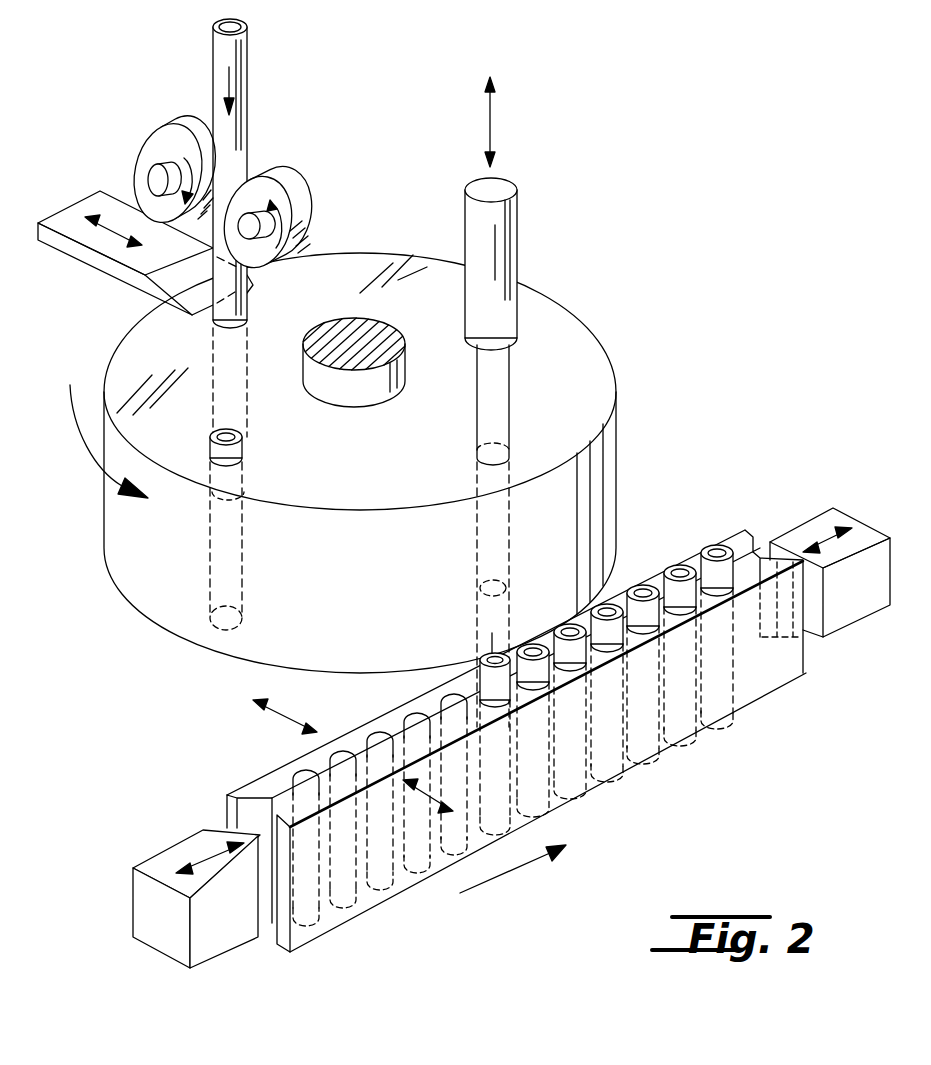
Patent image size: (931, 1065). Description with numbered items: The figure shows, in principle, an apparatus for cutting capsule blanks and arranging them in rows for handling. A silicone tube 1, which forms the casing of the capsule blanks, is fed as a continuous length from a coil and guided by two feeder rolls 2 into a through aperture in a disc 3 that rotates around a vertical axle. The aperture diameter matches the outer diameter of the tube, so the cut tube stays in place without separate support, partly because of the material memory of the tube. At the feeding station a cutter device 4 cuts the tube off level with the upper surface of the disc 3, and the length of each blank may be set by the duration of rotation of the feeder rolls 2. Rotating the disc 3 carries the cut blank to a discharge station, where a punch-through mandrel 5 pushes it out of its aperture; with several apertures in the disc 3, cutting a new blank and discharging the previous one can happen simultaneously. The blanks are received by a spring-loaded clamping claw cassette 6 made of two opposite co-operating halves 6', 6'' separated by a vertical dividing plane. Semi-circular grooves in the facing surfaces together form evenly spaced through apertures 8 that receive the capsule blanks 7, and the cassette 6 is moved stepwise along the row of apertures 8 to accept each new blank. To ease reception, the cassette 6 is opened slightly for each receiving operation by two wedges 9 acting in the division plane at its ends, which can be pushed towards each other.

The silicone tube 1 is at (230, 52).
The feeder rolls 2 is at (180, 128).
The disc 3 is at (583, 348).
The cutter device 4 is at (68, 218).
The punch-through mandrel 5 is at (492, 222).
The clamping claw cassette 6 is at (516, 748).
The cassette half 6' is at (245, 828).
The cassette half 6'' is at (776, 651).
The capsule blanks 7 is at (212, 440).
The through apertures 8 is at (410, 730).
The wedges 9 is at (218, 937).